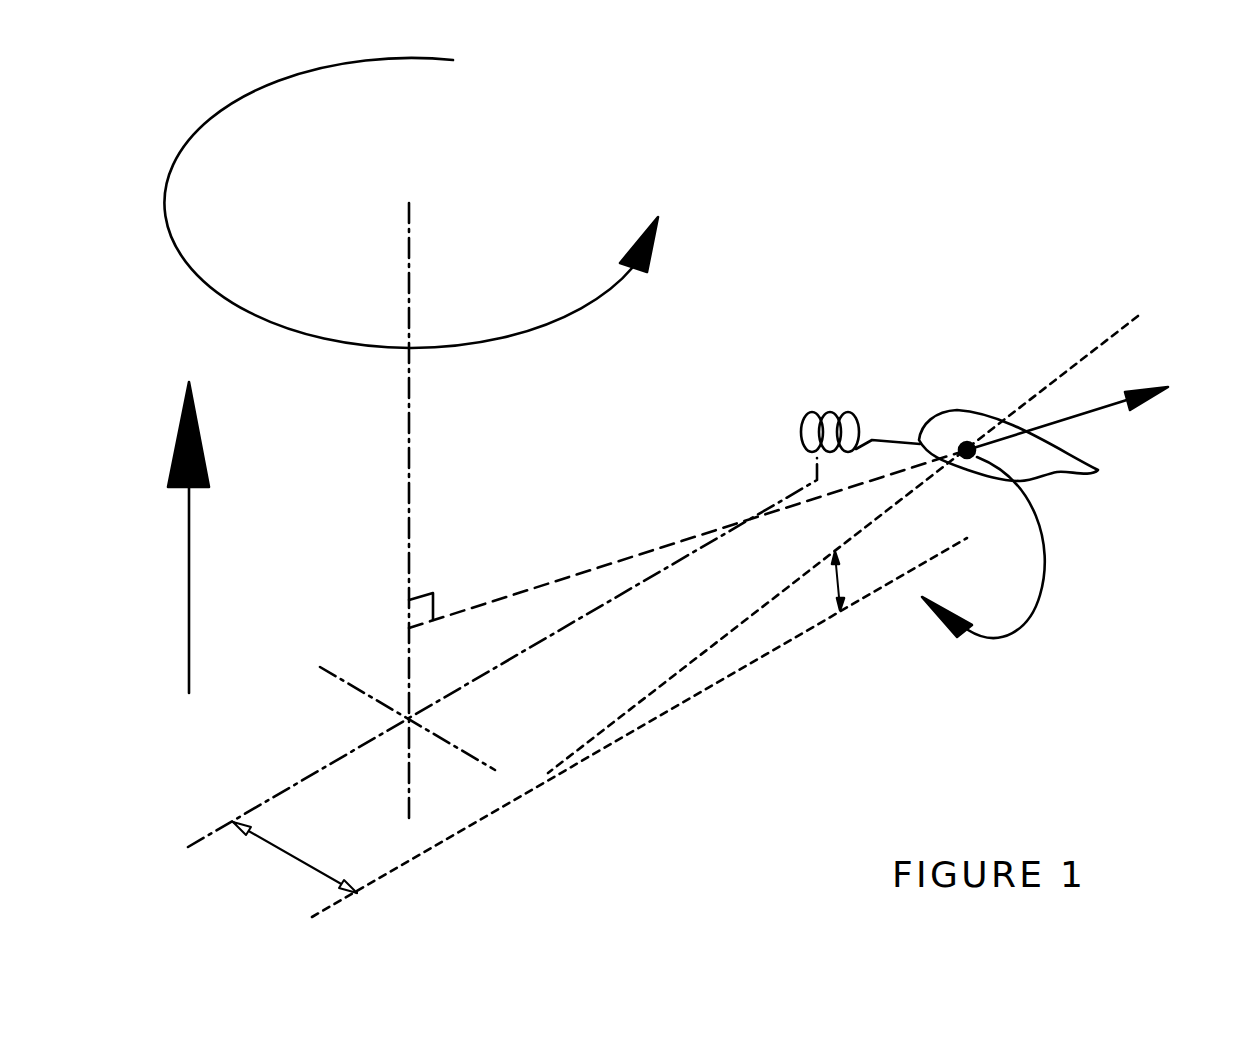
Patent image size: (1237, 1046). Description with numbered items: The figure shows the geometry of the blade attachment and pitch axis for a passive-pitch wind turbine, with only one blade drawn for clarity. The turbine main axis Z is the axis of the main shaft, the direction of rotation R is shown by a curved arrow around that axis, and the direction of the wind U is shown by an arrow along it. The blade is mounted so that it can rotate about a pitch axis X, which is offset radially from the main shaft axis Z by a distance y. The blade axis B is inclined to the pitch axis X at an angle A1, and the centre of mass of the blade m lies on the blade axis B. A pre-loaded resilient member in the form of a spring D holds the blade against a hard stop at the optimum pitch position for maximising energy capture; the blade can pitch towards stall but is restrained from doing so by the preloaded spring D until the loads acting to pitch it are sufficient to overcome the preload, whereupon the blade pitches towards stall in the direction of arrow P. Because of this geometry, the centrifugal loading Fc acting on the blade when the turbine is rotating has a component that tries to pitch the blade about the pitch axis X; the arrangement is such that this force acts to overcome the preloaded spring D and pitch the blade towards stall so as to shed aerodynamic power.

The turbine main axis Z is at (392, 510).
The direction of rotation R is at (438, 203).
The direction of the wind U is at (216, 537).
The spring D is at (780, 399).
The centre of mass of the blade m is at (940, 423).
The blade axis B is at (822, 561).
The centrifugal loading Fc is at (1090, 418).
The pitch axis X is at (643, 733).
The angle A1 is at (867, 575).
The direction of pitching towards stall P is at (983, 577).
The radial offset distance y is at (295, 857).